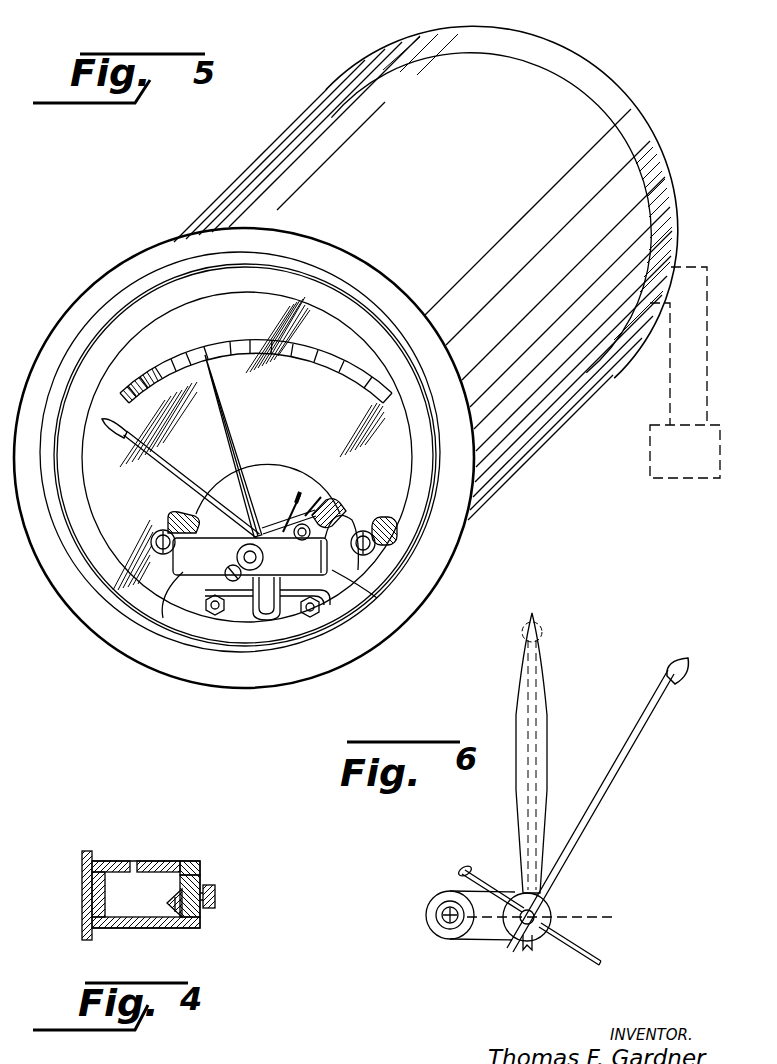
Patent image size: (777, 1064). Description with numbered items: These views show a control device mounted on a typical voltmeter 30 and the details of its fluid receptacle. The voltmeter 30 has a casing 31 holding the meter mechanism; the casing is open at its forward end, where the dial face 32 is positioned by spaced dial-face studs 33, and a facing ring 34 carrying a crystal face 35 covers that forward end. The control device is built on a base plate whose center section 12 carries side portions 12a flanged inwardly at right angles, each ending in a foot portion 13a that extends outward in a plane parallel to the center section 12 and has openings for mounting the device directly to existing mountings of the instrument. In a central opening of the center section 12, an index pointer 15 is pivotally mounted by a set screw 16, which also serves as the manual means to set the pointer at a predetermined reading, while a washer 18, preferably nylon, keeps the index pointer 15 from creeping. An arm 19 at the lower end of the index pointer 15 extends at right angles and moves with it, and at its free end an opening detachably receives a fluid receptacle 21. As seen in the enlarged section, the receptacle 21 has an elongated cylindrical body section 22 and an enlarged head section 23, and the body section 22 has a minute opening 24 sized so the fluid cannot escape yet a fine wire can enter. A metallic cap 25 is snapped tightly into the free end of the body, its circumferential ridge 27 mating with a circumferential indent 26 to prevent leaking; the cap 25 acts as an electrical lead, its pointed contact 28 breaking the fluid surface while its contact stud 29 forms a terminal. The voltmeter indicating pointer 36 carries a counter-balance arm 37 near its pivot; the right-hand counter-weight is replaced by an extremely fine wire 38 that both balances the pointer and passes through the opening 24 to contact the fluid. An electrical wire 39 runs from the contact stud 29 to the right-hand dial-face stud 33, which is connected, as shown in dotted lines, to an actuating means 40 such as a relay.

In FIG. 5, the center section 12 is at (192, 570).
In FIG. 5, the side portions 12a is at (207, 513).
In FIG. 5, the foot portion 13a is at (173, 520).
In FIG. 5, the index pointer 15 is at (230, 457).
In FIG. 6, the index pointer 15 is at (547, 710).
In FIG. 5, the set screw 16 is at (242, 558).
In FIG. 5, the washer 18 is at (264, 558).
In FIG. 5, the arm 19 is at (283, 529).
In FIG. 5, the fluid receptacle 21 is at (341, 497).
In FIG. 6, the fluid receptacle 21 is at (447, 940).
In FIG. 4, the fluid receptacle 21 is at (115, 930).
In FIG. 4, the body section 22 is at (131, 928).
In FIG. 4, the head section 23 is at (89, 851).
In FIG. 5, the opening 24 is at (332, 505).
In FIG. 4, the opening 24 is at (135, 861).
In FIG. 4, the metallic cap 25 is at (205, 880).
In FIG. 4, the circumferential indent 26 is at (190, 861).
In FIG. 4, the circumferential ridge 27 is at (200, 908).
In FIG. 4, the pointed contact 28 is at (183, 918).
In FIG. 4, the contact stud 29 is at (216, 895).
In FIG. 5, the voltmeter 30 is at (268, 690).
In FIG. 5, the casing 31 is at (295, 147).
In FIG. 5, the dial face 32 is at (154, 366).
In FIG. 5, the dial-face studs 33 is at (412, 548).
In FIG. 5, the facing ring 34 is at (322, 663).
In FIG. 5, the crystal face 35 is at (408, 518).
In FIG. 5, the indicating pointer 36 is at (157, 467).
In FIG. 6, the indicating pointer 36 is at (622, 777).
In FIG. 5, the counter-balance arm 37 is at (286, 512).
In FIG. 6, the counter-balance arm 37 is at (562, 944).
In FIG. 5, the wire 38 is at (315, 494).
In FIG. 6, the wire 38 is at (459, 874).
In FIG. 5, the electrical wire 39 is at (352, 521).
In FIG. 5, the actuating means 40 is at (685, 385).